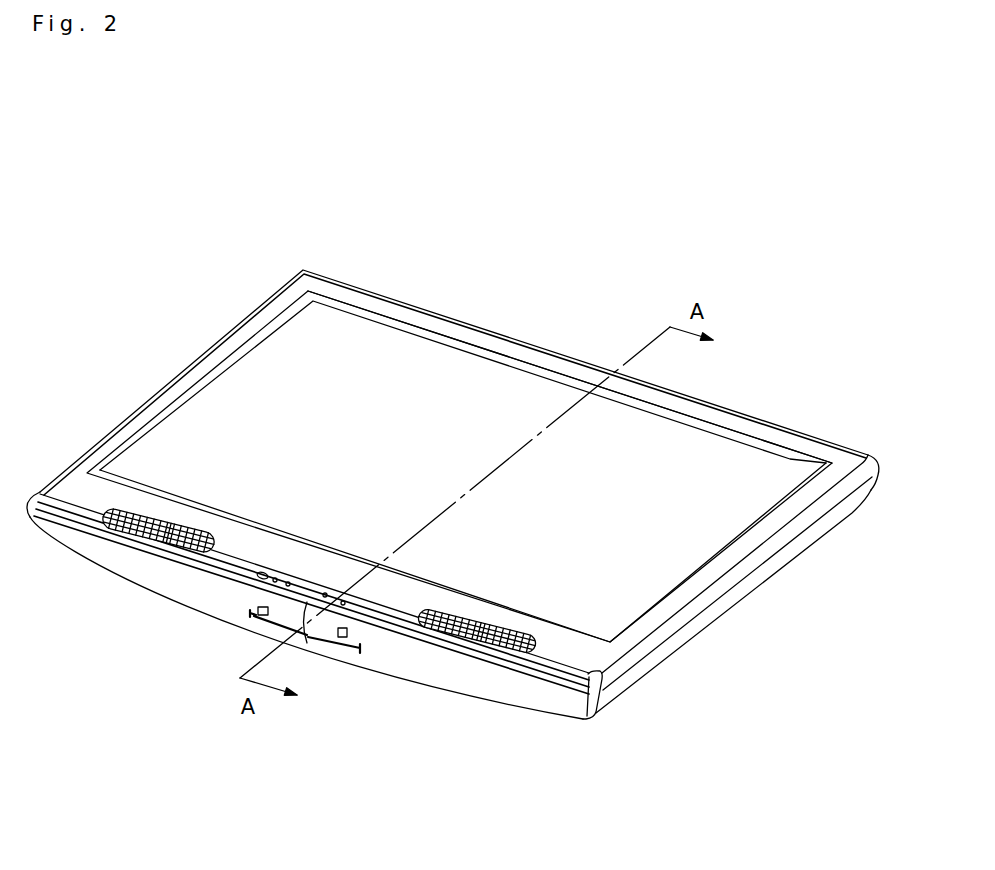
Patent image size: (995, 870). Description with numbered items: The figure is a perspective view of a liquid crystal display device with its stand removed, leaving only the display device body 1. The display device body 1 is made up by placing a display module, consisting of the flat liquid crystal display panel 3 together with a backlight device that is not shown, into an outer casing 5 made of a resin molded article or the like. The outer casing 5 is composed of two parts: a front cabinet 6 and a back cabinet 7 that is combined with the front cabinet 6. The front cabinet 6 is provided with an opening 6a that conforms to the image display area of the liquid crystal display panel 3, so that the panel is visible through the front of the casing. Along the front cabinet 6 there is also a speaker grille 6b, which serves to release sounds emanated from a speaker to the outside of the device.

The display device body 1 is at (482, 328).
The liquid crystal display panel 3 is at (261, 367).
The outer casing 5 is at (662, 660).
The front cabinet 6 is at (767, 437).
The opening 6a is at (563, 377).
The speaker grille 6b is at (133, 530).
The back cabinet 7 is at (770, 568).